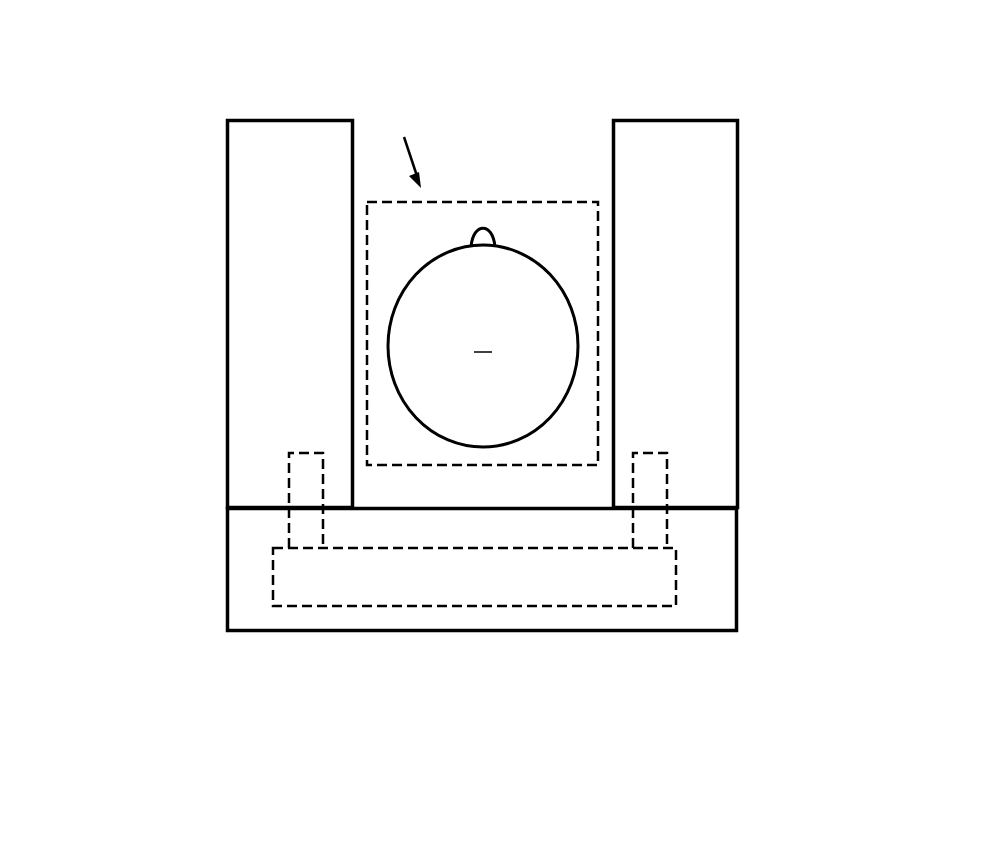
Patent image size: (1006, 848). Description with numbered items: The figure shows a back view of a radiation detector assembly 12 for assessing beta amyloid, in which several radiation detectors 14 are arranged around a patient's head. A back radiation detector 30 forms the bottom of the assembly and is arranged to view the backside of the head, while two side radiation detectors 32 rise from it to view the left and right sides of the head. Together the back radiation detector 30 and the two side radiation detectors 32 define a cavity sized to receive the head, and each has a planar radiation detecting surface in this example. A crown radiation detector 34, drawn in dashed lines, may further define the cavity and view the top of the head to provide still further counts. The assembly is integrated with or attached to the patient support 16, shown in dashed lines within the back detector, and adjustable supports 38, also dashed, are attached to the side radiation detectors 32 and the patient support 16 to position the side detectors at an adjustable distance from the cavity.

The radiation detector assembly 12 is at (122, 101).
The radiation detector 14 is at (912, 110).
The patient support 16 is at (676, 576).
The back radiation detector 30 is at (226, 570).
The side radiation detectors 32 is at (226, 290).
The crown radiation detector 34 is at (566, 201).
The adjustable supports 38 is at (289, 514).